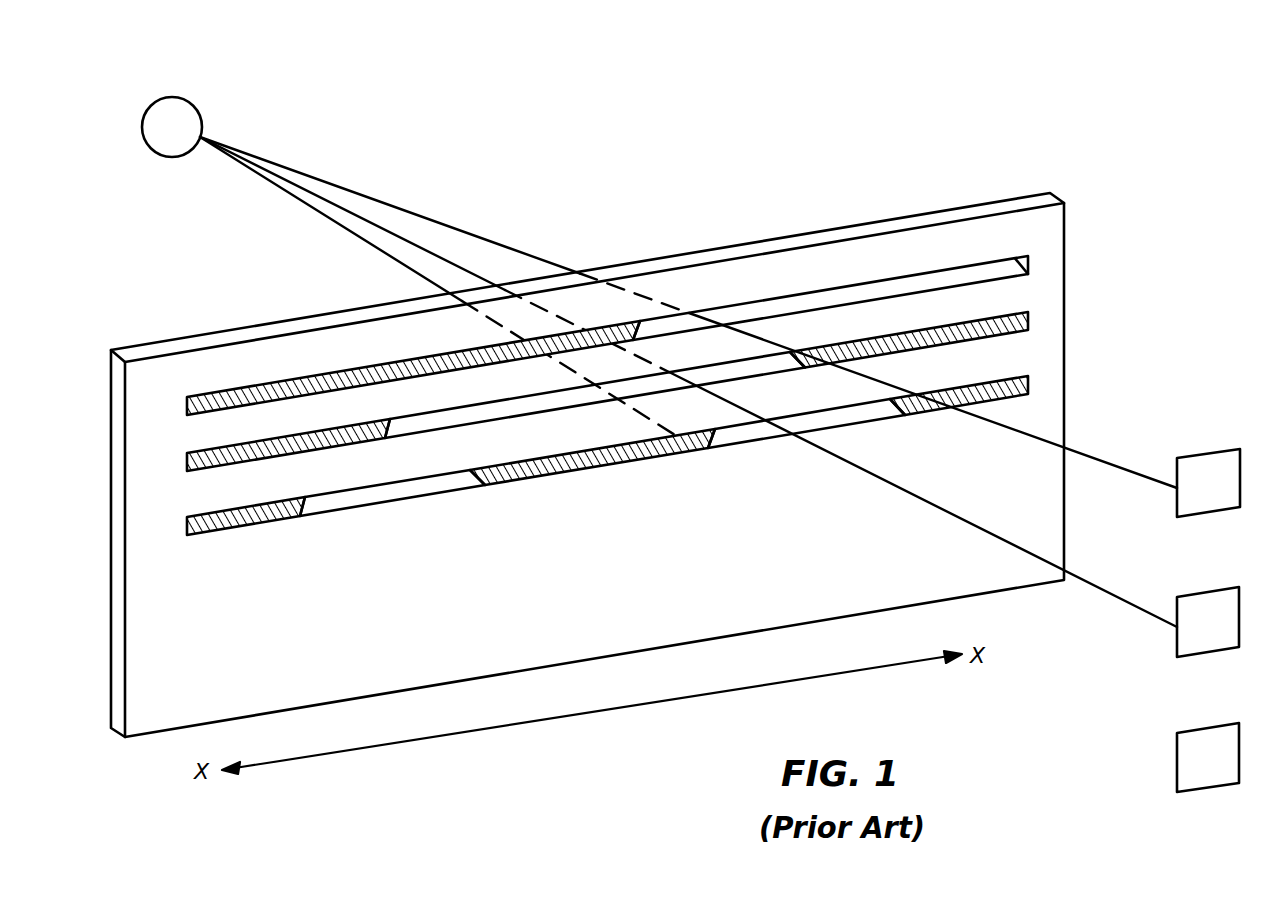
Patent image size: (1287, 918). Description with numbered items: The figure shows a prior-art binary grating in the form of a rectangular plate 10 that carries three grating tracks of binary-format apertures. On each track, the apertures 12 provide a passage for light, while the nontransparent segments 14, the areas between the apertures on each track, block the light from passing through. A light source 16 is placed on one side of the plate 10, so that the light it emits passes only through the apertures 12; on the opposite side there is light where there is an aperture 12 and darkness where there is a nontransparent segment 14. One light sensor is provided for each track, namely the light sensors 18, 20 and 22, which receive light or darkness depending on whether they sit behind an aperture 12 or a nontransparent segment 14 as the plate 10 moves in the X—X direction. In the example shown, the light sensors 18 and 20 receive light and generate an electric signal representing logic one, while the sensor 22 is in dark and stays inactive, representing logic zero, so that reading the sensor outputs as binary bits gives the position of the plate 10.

The rectangular plate 10 is at (1068, 178).
The apertures 12 is at (868, 290).
The nontransparent segments 14 is at (322, 373).
The light source 16 is at (173, 97).
The light sensor 18 is at (1217, 455).
The light sensor 20 is at (1212, 597).
The light sensor 22 is at (1217, 732).